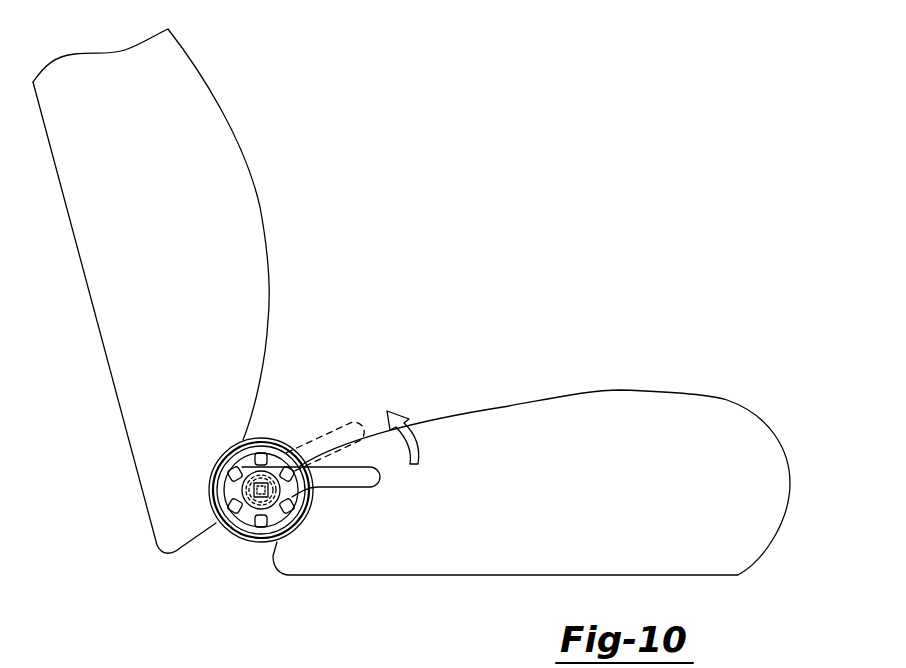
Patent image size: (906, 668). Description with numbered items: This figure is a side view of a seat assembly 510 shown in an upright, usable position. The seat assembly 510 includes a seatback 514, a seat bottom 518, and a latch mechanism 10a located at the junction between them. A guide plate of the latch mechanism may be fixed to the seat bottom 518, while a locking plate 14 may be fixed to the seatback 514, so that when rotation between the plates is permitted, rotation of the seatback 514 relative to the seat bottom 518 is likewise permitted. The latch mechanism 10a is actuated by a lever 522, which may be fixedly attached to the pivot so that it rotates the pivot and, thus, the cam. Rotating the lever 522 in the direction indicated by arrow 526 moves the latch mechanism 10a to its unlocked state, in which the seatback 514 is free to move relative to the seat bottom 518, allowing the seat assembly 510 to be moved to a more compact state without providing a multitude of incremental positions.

The seat assembly 510 is at (458, 198).
The seatback 514 is at (250, 236).
The seat bottom 518 is at (687, 410).
The locking plate 14 is at (240, 460).
The latch mechanism 10a is at (242, 545).
The lever 522 is at (368, 483).
The arrow 526 is at (413, 427).